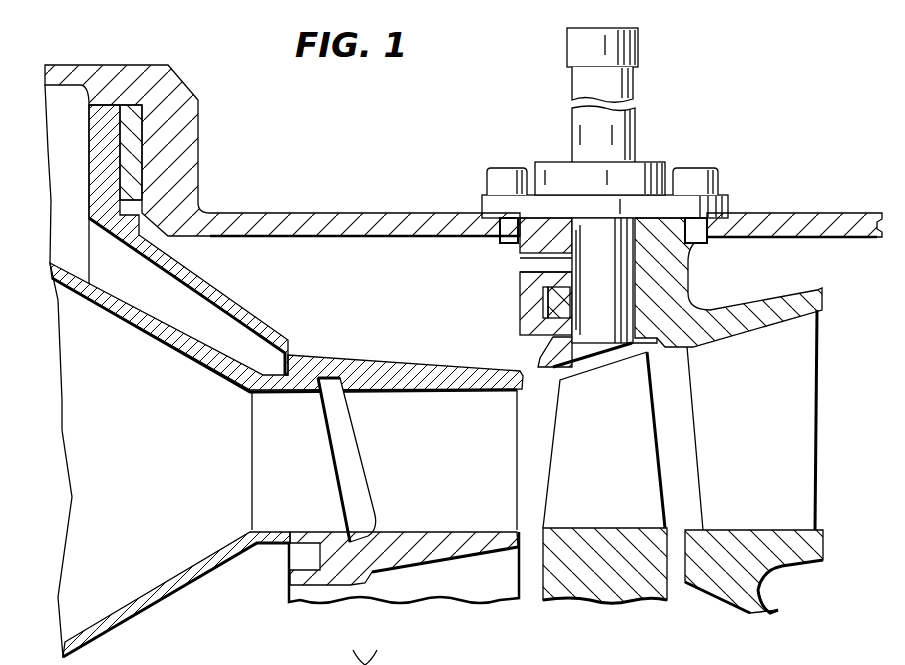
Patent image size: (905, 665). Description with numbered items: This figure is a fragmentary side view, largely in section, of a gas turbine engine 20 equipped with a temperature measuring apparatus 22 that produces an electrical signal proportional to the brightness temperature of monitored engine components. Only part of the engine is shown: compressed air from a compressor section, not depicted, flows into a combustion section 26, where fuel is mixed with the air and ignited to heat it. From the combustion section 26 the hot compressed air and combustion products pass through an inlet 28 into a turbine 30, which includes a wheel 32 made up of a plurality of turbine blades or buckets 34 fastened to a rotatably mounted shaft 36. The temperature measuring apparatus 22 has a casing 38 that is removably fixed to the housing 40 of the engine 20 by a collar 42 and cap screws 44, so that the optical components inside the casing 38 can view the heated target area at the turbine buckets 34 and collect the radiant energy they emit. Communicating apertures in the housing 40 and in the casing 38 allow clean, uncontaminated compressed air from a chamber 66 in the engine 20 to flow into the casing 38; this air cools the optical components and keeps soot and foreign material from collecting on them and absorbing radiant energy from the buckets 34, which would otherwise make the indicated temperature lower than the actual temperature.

The gas turbine engine 20 is at (333, 128).
The temperature measuring apparatus 22 is at (560, 77).
The combustion section 26 is at (130, 452).
The inlet 28 is at (523, 370).
The turbine 30 is at (570, 608).
The wheel 32 is at (520, 520).
The turbine blades or buckets 34 is at (589, 424).
The shaft 36 is at (668, 590).
The casing 38 is at (636, 133).
The housing 40 is at (310, 213).
The collar 42 is at (553, 162).
The cap screws 44 is at (488, 174).
The chamber 66 is at (343, 267).